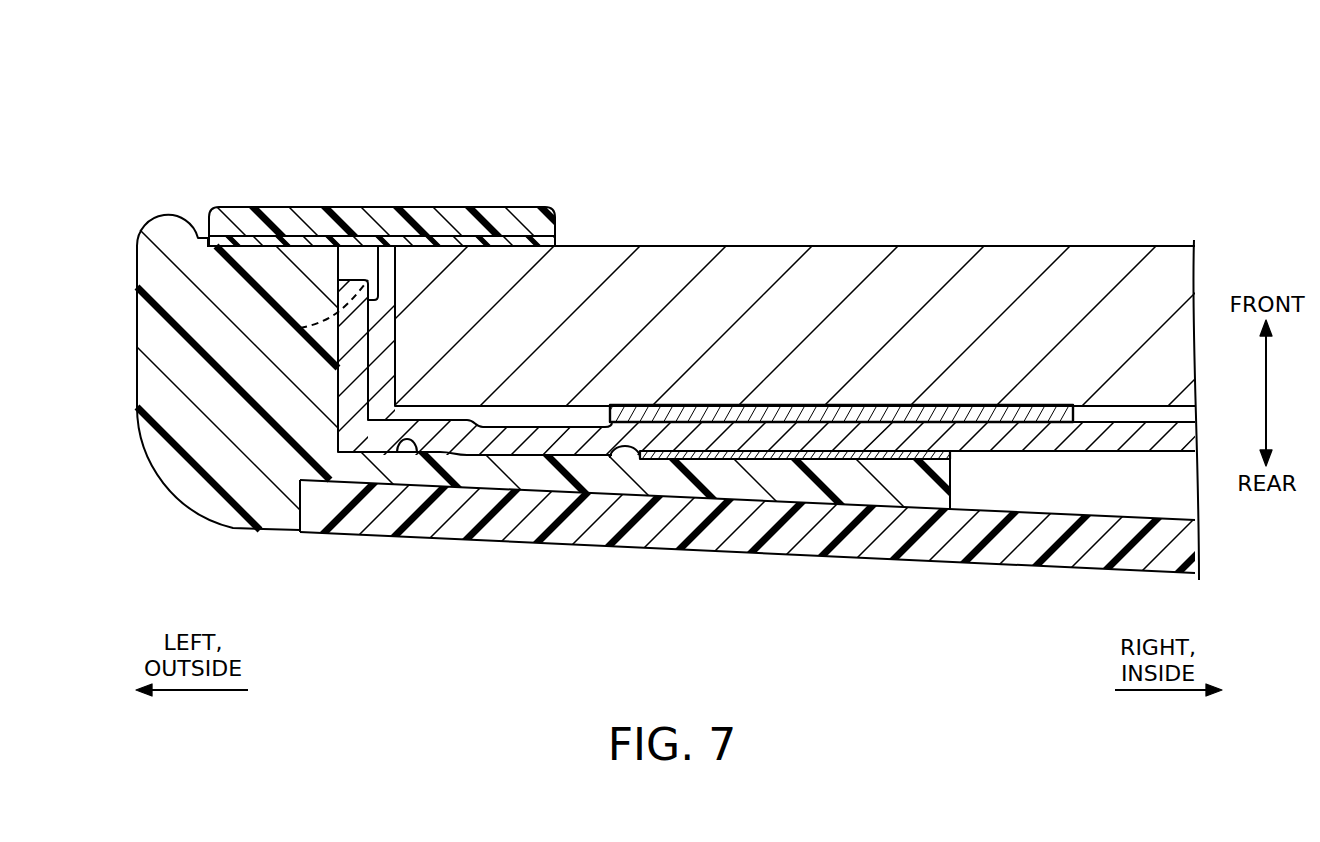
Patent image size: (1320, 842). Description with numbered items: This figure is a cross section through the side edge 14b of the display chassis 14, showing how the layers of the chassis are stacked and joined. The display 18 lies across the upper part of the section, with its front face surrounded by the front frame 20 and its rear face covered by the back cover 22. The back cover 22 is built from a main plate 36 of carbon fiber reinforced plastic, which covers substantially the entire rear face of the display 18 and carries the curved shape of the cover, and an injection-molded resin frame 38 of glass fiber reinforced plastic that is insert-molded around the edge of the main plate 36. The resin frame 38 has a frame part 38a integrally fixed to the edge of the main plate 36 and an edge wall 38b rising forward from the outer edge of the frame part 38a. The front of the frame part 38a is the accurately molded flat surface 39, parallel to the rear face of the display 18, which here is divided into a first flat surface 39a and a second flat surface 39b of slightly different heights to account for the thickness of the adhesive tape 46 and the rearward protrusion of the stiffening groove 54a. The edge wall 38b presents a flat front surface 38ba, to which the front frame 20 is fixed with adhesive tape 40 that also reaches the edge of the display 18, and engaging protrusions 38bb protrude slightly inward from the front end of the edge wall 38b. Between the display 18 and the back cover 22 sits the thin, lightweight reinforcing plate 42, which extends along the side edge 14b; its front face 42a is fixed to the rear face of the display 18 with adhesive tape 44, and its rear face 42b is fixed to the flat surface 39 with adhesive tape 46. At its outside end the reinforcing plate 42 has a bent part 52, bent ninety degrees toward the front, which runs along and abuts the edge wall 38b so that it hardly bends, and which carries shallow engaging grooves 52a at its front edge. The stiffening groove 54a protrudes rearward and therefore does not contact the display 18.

The display chassis 14 is at (1098, 84).
The side edge 14b is at (138, 270).
The display 18 is at (752, 246).
The front frame 20 is at (430, 207).
The back cover 22 is at (517, 408).
The main plate 36 is at (326, 542).
The injection-molded resin frame 38 is at (517, 380).
The frame part 38a is at (733, 480).
The edge wall 38b is at (140, 378).
The front surface 38ba is at (258, 247).
The engaging protrusion 38bb is at (355, 262).
The flat surface 39 is at (621, 458).
The first flat surface 39a is at (625, 452).
The second flat surface 39b is at (405, 440).
The adhesive tape 40 is at (489, 243).
The reinforcing plate 42 is at (1012, 440).
The front face 42a is at (824, 420).
The rear face 42b is at (787, 452).
The adhesive tape 44 is at (895, 405).
The adhesive tape 46 is at (866, 456).
The bent part 52 is at (352, 373).
The engaging groove 52a is at (300, 328).
The stiffening groove 54a is at (540, 415).